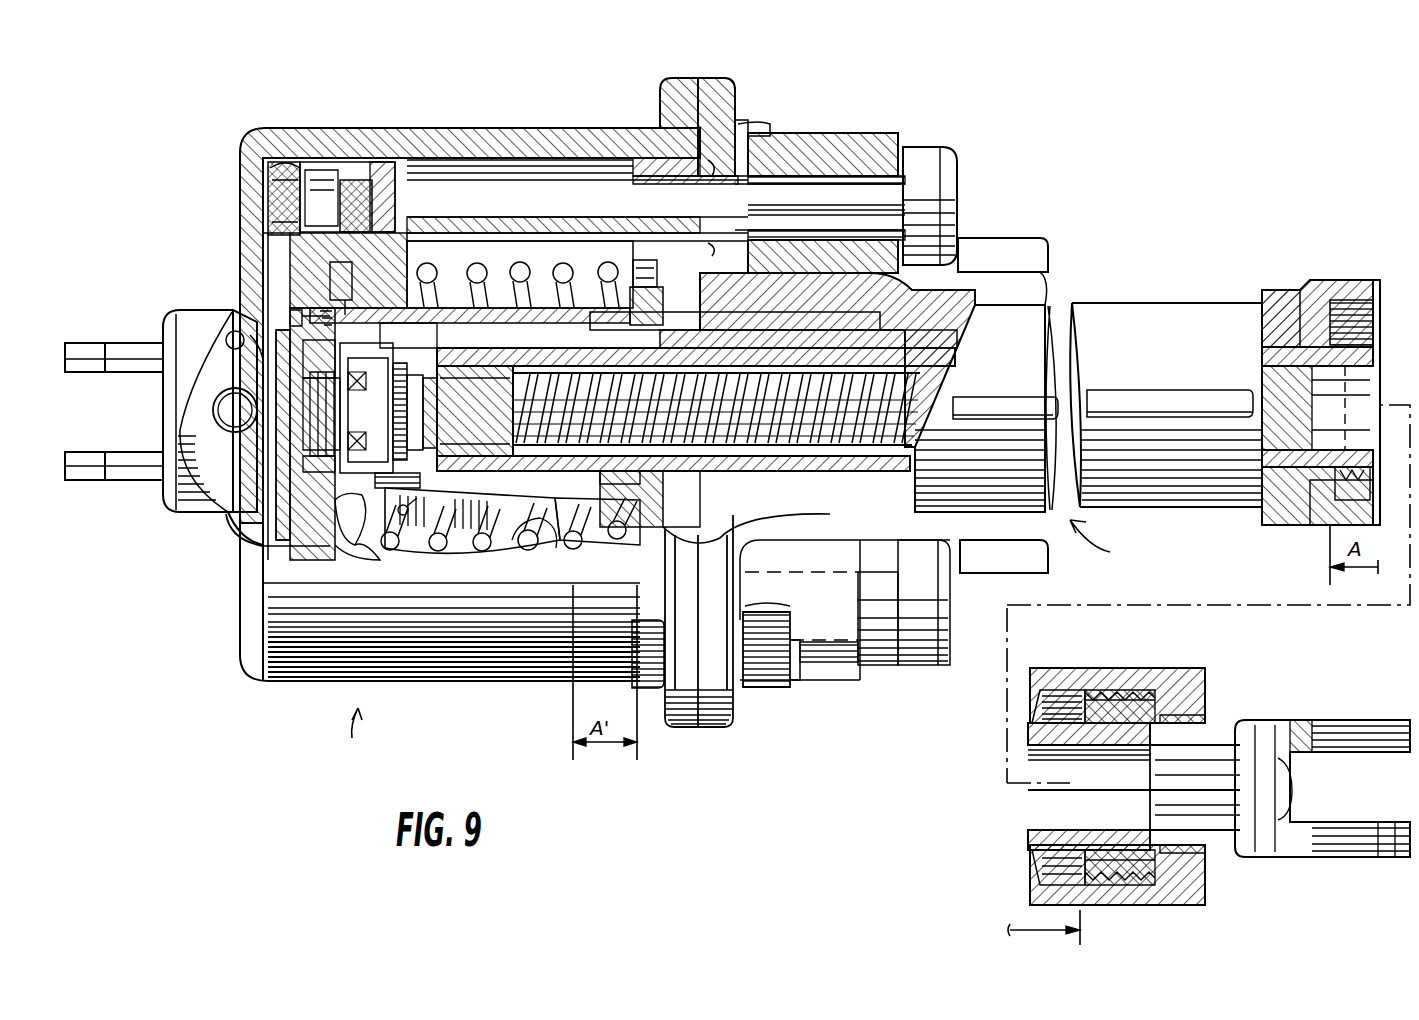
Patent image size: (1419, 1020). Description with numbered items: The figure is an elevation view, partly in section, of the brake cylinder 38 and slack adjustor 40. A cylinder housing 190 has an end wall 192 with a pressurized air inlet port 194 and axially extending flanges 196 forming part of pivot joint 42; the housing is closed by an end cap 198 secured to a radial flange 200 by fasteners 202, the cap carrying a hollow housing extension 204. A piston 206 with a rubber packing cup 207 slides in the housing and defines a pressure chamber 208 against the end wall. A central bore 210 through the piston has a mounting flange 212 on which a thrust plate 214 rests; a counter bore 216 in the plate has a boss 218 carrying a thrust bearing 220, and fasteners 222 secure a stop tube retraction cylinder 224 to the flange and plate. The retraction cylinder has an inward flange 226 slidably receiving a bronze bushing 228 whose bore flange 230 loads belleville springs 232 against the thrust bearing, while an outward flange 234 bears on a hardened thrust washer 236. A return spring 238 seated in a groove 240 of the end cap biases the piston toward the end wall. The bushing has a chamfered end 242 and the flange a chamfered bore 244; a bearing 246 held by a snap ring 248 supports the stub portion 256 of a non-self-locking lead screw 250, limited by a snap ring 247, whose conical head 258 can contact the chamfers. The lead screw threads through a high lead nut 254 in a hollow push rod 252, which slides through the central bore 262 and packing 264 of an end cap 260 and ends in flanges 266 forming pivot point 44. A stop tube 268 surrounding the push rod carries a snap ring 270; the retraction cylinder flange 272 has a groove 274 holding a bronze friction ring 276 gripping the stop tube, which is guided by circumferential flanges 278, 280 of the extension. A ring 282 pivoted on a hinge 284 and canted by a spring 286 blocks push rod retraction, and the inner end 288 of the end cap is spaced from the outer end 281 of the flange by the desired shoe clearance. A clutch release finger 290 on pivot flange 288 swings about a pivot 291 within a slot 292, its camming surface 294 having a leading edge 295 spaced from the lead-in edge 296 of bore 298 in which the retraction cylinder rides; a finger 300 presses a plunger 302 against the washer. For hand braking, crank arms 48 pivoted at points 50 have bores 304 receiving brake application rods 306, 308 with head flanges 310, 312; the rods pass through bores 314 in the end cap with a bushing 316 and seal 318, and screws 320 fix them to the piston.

The brake cylinder 38 is at (351, 731).
The slack adjustor 40 is at (1208, 594).
The pivot joint 42 is at (118, 350).
The pivot point 44 is at (1366, 722).
The crank arms 48 is at (810, 138).
The pivot points 50 is at (974, 250).
The cylinder housing 190 is at (452, 148).
The end wall 192 is at (245, 220).
The pressurized air inlet port 194 is at (212, 362).
The axially extending flanges 196 is at (86, 382).
The end cap 198 is at (712, 92).
The radial flange 200 is at (680, 88).
The fasteners 202 is at (746, 128).
The housing extension 204 is at (958, 312).
The piston 206 is at (365, 158).
The rubber packing cup 207 is at (268, 198).
The pressure chamber 208 is at (250, 538).
The central bore 210 is at (348, 270).
The mounting flange 212 is at (345, 308).
The thrust plate 214 is at (278, 540).
The counter bore 216 is at (312, 434).
The boss 218 is at (235, 410).
The thrust bearing 220 is at (262, 345).
The fasteners 222 is at (280, 310).
The stop tube retraction cylinder 224 is at (440, 300).
The radially inwardly extending flange 226 is at (416, 350).
The bronze bushing 228 is at (312, 568).
The flange 230 is at (303, 464).
The belleville springs 232 is at (303, 440).
The radially outwardly extending flange 234 is at (250, 335).
The hardened thrust washer 236 is at (408, 335).
The return spring 238 is at (528, 282).
The groove 240 is at (632, 272).
The chamfered end 242 is at (420, 482).
The chamfered bore 244 is at (456, 348).
The bearing 246 is at (366, 403).
The snap ring 247 is at (303, 410).
The snap ring 248 is at (404, 455).
The lead screw 250 is at (942, 372).
The push rod 252 is at (576, 348).
The high lead nut 254 is at (484, 474).
The stub portion 256 is at (475, 411).
The conical head 258 is at (468, 411).
The end cap 260 is at (1205, 672).
The central bore 262 is at (1148, 830).
The packing 264 is at (1208, 722).
The axially extending flanges 266 is at (1293, 790).
The stop tube 268 is at (768, 340).
The snap ring 270 is at (600, 480).
The inwardly directed flange 272 is at (660, 290).
The circumferential groove 274 is at (664, 322).
The bronze friction ring 276 is at (690, 340).
The circumferential flange 278 is at (905, 300).
The circumferential flange 280 is at (1340, 292).
The outer end 281 is at (1318, 510).
The ring 282 is at (1366, 474).
The hinge 284 is at (1373, 315).
The spring 286 is at (1296, 505).
The inner end of end cap 288 is at (392, 550).
The clutch release finger 290 is at (472, 520).
The pivot 291 is at (420, 504).
The slot 292 is at (582, 540).
The camming surface 294 is at (484, 551).
The leading edge 295 is at (532, 549).
The lead-in edge 296 is at (695, 540).
The bore 298 is at (664, 514).
The finger 300 is at (348, 519).
The plunger 302 is at (355, 556).
The bores 304 is at (855, 152).
The brake application rod 306 is at (820, 205).
The brake application rod 308 is at (860, 600).
The head flange 310 is at (918, 160).
The head flange 312 is at (940, 590).
The bores 314 is at (694, 184).
The bushing 316 is at (647, 176).
The seal 318 is at (726, 178).
The screws 320 is at (384, 208).